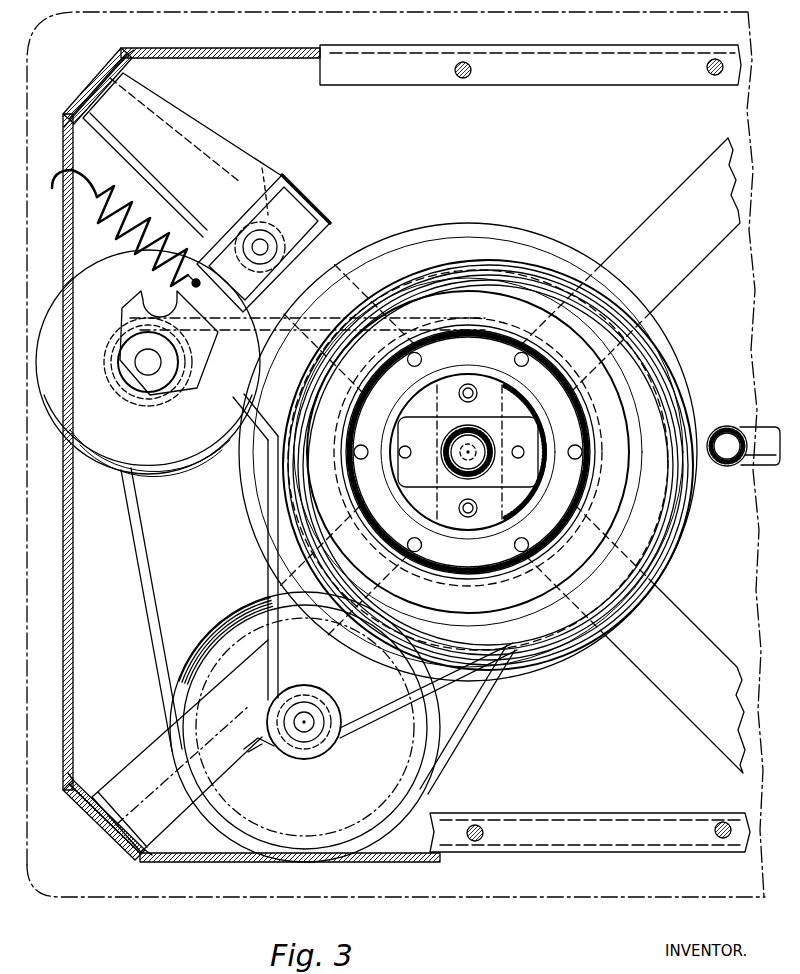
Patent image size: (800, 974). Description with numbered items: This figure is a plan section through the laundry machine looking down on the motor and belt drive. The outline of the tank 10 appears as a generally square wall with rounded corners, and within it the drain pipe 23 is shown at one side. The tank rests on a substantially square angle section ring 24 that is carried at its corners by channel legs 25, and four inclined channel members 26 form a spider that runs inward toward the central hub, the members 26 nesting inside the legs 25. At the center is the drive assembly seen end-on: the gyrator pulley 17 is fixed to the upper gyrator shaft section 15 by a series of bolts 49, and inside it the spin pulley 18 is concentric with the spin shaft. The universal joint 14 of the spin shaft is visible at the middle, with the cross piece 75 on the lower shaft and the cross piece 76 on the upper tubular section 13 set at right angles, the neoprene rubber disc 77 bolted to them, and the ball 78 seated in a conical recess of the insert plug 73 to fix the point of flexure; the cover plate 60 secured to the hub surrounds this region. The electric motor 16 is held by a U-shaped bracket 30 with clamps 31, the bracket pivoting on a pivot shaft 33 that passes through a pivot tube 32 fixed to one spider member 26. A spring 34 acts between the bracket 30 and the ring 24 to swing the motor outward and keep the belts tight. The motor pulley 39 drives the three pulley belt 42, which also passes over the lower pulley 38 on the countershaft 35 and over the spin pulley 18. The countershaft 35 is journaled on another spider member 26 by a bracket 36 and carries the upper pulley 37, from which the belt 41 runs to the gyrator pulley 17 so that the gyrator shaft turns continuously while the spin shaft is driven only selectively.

The tank 10 is at (129, 912).
The upper section of spin shaft 13 is at (444, 466).
The universal joint 14 is at (558, 434).
The upper section of gyrator shaft 15 is at (585, 480).
The electric motor 16 is at (175, 466).
The gyrator pulley 17 is at (545, 265).
The spin pulley 18 is at (488, 326).
The drain pipe 23 is at (734, 428).
The angle section ring 24 is at (186, 62).
The channel legs 25 is at (104, 80).
The inclined channel members 26 is at (202, 158).
The U-shaped bracket 30 is at (298, 194).
The clamps 31 is at (148, 397).
The pivot tube 32 is at (258, 183).
The pivot shaft 33 is at (262, 247).
The spring 34 is at (112, 237).
The countershaft 35 is at (304, 728).
The bracket 36 is at (258, 746).
The upper pulley 37 is at (340, 710).
The lower pulley 38 is at (402, 762).
The motor pulley 39 is at (110, 345).
The belt 41 is at (266, 572).
The three pulley belt 42 is at (150, 632).
The bolts 49 is at (582, 452).
The cover plate 60 is at (247, 500).
The insert plug 73 is at (462, 433).
The cross piece 75 is at (427, 392).
The cross piece 76 is at (405, 433).
The neoprene rubber disc 77 is at (430, 507).
The ball 78 is at (480, 503).